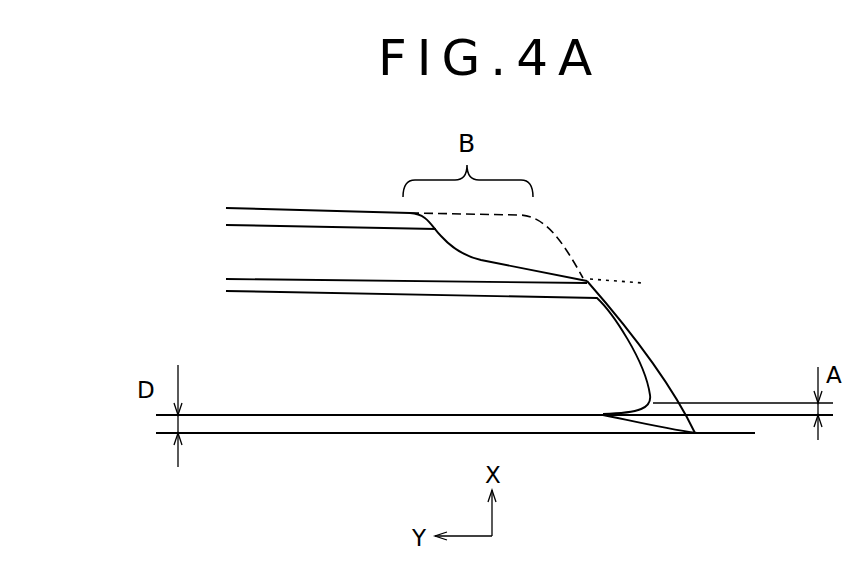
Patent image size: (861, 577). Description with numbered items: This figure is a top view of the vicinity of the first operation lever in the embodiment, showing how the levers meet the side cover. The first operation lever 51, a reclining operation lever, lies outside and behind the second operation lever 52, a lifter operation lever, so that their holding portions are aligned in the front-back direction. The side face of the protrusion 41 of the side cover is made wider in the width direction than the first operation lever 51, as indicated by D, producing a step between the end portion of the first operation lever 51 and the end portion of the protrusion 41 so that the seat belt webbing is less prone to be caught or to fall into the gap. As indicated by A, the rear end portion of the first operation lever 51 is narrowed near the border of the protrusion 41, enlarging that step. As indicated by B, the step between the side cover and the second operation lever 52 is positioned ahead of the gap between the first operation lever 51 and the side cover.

The second operation lever 52 is at (237, 253).
The first operation lever 51 is at (228, 347).
The protrusion 41 is at (722, 372).